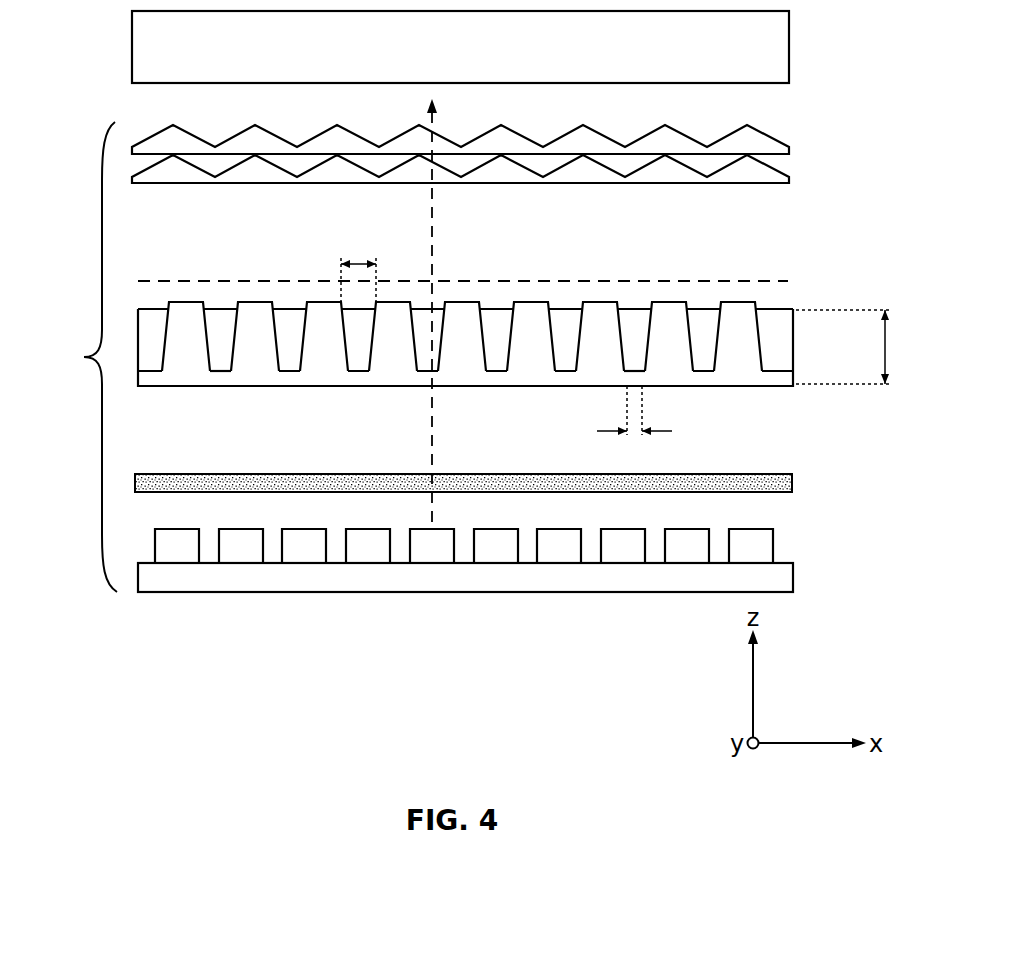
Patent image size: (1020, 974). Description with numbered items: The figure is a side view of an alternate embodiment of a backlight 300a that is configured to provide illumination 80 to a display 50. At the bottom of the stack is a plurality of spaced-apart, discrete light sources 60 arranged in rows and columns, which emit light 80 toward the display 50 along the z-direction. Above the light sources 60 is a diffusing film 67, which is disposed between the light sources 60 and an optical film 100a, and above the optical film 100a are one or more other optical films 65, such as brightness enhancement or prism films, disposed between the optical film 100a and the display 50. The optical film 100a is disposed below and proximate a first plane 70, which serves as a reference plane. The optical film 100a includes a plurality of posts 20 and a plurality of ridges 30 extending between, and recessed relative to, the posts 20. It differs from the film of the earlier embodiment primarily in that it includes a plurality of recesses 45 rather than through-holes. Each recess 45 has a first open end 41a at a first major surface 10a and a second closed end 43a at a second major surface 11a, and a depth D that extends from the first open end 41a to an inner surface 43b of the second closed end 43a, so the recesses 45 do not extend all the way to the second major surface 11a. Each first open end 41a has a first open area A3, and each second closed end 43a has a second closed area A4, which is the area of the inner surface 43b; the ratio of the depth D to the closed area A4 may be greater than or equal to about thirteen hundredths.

The backlight 300a is at (68, 357).
The display 50 is at (765, 62).
The other optical films 65 is at (789, 183).
The illumination 80 is at (434, 230).
The first plane 70 is at (724, 281).
The optical film 100a is at (494, 341).
The first major surface 10a is at (449, 341).
The ridges 30 is at (567, 308).
The first open end 41a is at (209, 298).
The posts 20 is at (600, 315).
The recesses 45 is at (216, 320).
The inner surface 43b is at (637, 368).
The second major surface 11a is at (146, 386).
The second closed end 43a is at (217, 396).
The first open area A3 is at (357, 258).
The second closed area A4 is at (608, 431).
The depth D is at (887, 347).
The diffusing film 67 is at (790, 480).
The discrete light sources 60 is at (760, 548).